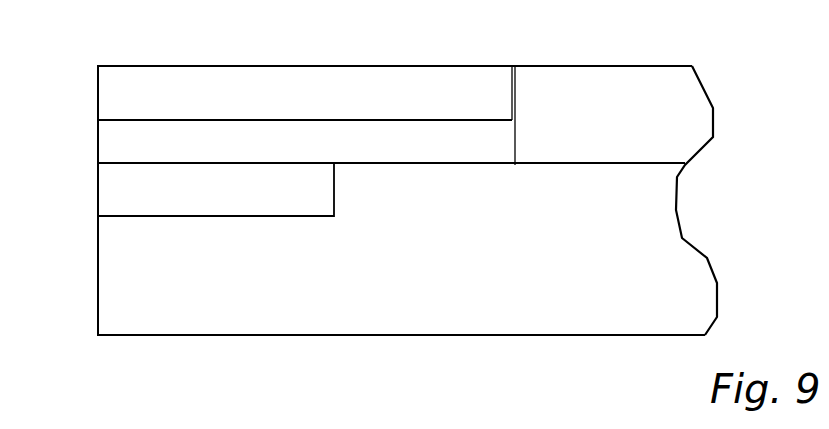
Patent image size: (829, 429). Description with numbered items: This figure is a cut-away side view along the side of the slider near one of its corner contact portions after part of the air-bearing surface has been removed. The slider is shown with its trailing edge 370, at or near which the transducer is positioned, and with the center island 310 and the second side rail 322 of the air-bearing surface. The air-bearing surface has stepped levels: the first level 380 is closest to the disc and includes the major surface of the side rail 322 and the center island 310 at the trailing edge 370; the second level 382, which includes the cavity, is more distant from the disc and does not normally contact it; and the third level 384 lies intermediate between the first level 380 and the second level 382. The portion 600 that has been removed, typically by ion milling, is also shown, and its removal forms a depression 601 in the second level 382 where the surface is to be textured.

The center island 310 is at (161, 64).
The second side rail 322 is at (585, 65).
The trailing edge 370 is at (97, 277).
The first level 380 is at (236, 65).
The second level 382 is at (395, 164).
The third level 384 is at (268, 120).
The removed portion 600 is at (307, 168).
The depression 601 is at (175, 215).